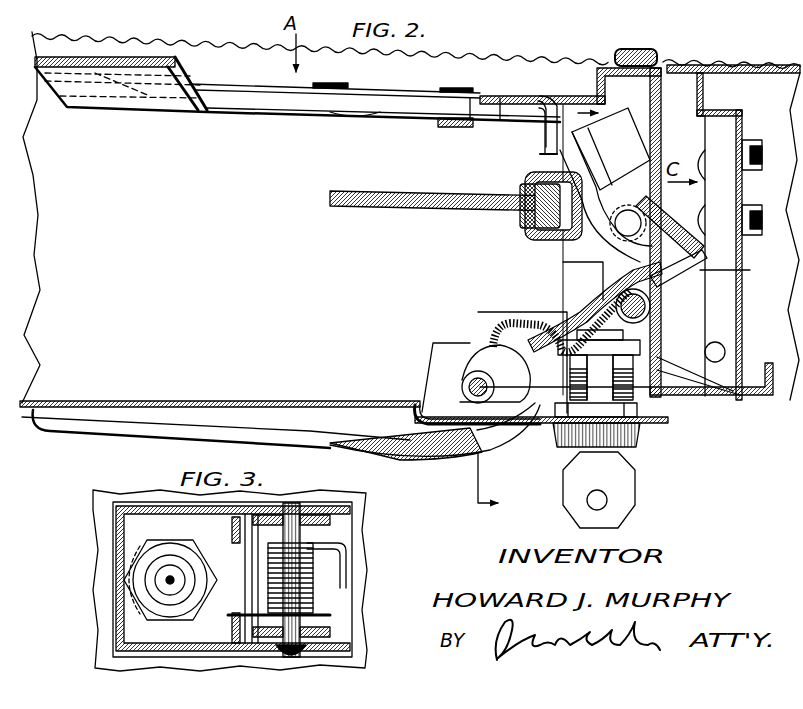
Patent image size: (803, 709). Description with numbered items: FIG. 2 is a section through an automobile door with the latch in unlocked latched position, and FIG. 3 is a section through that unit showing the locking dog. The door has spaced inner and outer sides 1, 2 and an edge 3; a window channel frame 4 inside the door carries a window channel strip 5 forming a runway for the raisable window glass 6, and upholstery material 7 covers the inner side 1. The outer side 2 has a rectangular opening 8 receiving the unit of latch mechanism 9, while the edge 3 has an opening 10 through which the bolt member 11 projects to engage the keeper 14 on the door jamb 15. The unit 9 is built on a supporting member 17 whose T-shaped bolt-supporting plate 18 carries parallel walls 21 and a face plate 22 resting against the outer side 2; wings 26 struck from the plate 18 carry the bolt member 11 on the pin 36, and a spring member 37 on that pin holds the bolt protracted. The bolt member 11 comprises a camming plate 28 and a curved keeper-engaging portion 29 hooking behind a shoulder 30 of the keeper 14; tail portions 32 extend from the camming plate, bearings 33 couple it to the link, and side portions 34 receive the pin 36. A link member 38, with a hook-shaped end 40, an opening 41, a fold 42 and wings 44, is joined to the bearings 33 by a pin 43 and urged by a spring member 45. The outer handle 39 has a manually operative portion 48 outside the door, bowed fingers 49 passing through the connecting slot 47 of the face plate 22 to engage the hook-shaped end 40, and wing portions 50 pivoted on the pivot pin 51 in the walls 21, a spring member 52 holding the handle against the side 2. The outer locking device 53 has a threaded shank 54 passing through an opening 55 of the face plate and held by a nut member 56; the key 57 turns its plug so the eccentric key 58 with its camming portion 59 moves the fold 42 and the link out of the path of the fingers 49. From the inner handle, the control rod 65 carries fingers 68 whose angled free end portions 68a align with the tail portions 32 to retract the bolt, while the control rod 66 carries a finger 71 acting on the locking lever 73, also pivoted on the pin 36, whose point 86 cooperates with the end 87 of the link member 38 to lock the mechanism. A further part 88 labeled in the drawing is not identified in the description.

In FIG. 2, the inner side 1 is at (408, 98).
In FIG. 2, the outer side 2 is at (87, 405).
In FIG. 3, the outer side 2 is at (105, 596).
In FIG. 2, the edge 3 is at (661, 98).
In FIG. 2, the window channel frame 4 is at (550, 238).
In FIG. 2, the window channel strip 5 is at (523, 222).
In FIG. 2, the window glass 6 is at (393, 205).
In FIG. 2, the upholstery material 7 is at (474, 57).
In FIG. 2, the opening 8 is at (366, 384).
In FIG. 3, the opening 8 is at (128, 502).
In FIG. 2, the unit of latch mechanism 9 is at (693, 283).
In FIG. 2, the opening 10 is at (661, 200).
In FIG. 2, the bolt member 11 is at (683, 217).
In FIG. 2, the striker plate or keeper 14 is at (720, 115).
In FIG. 2, the door jamb 15 is at (743, 128).
In FIG. 2, the latch mechanism supporting member 17 is at (433, 343).
In FIG. 3, the latch mechanism supporting member 17 is at (113, 508).
In FIG. 2, the bolt-supporting plate 18 is at (661, 124).
In FIG. 2, the walls 21 is at (462, 343).
In FIG. 3, the walls 21 is at (335, 505).
In FIG. 2, the face plate 22 is at (663, 433).
In FIG. 3, the face plate 22 is at (145, 520).
In FIG. 2, the wings 26 is at (608, 253).
In FIG. 2, the camming plate 28 is at (702, 216).
In FIG. 2, the keeper-engaging portion 29 is at (702, 270).
In FIG. 2, the shoulder 30 is at (738, 292).
In FIG. 2, the tail portions 32 is at (575, 130).
In FIG. 2, the bearings 33 is at (668, 333).
In FIG. 2, the side portions 34 is at (630, 267).
In FIG. 2, the pin 36 is at (592, 230).
In FIG. 2, the spring member 37 is at (650, 140).
In FIG. 2, the link member 38 is at (500, 338).
In FIG. 2, the outer handle 39 is at (298, 445).
In FIG. 2, the hook-shaped end 40 is at (474, 342).
In FIG. 2, the opening 41 is at (657, 230).
In FIG. 2, the fold 42 is at (547, 327).
In FIG. 2, the pin 43 is at (612, 297).
In FIG. 2, the wings 44 is at (590, 325).
In FIG. 2, the spring member 45 is at (667, 295).
In FIG. 2, the slot 47 is at (547, 445).
In FIG. 2, the manually operative portion 48 is at (122, 425).
In FIG. 2, the bowed fingers 49 is at (517, 337).
In FIG. 3, the bowed fingers 49 is at (245, 503).
In FIG. 2, the wing portions 50 is at (453, 382).
In FIG. 3, the wing portions 50 is at (345, 522).
In FIG. 2, the pivot pin 51 is at (472, 378).
In FIG. 3, the pivot pin 51 is at (305, 618).
In FIG. 2, the spring member 52 is at (487, 445).
In FIG. 3, the spring member 52 is at (345, 565).
In FIG. 2, the outer locking device 53 is at (617, 450).
In FIG. 2, the threaded shank 54 is at (622, 360).
In FIG. 3, the threaded shank 54 is at (190, 600).
In FIG. 2, the opening 55 is at (580, 450).
In FIG. 2, the nut member 56 is at (645, 440).
In FIG. 3, the nut member 56 is at (205, 557).
In FIG. 2, the key 57 is at (630, 508).
In FIG. 2, the eccentric key 58 is at (643, 340).
In FIG. 3, the eccentric key 58 is at (148, 560).
In FIG. 3, the camming portion 59 is at (130, 557).
In FIG. 2, the control rod 65 is at (372, 100).
In FIG. 2, the control rod 66 is at (385, 113).
In FIG. 2, the fingers 68 is at (530, 113).
In FIG. 2, the free end portions 68a is at (556, 150).
In FIG. 2, the finger 71 is at (502, 118).
In FIG. 2, the locking lever 73 is at (612, 168).
In FIG. 2, the point 86 is at (673, 270).
In FIG. 2, the end 87 is at (693, 269).
In FIG. 2, the lever face 88 is at (597, 138).